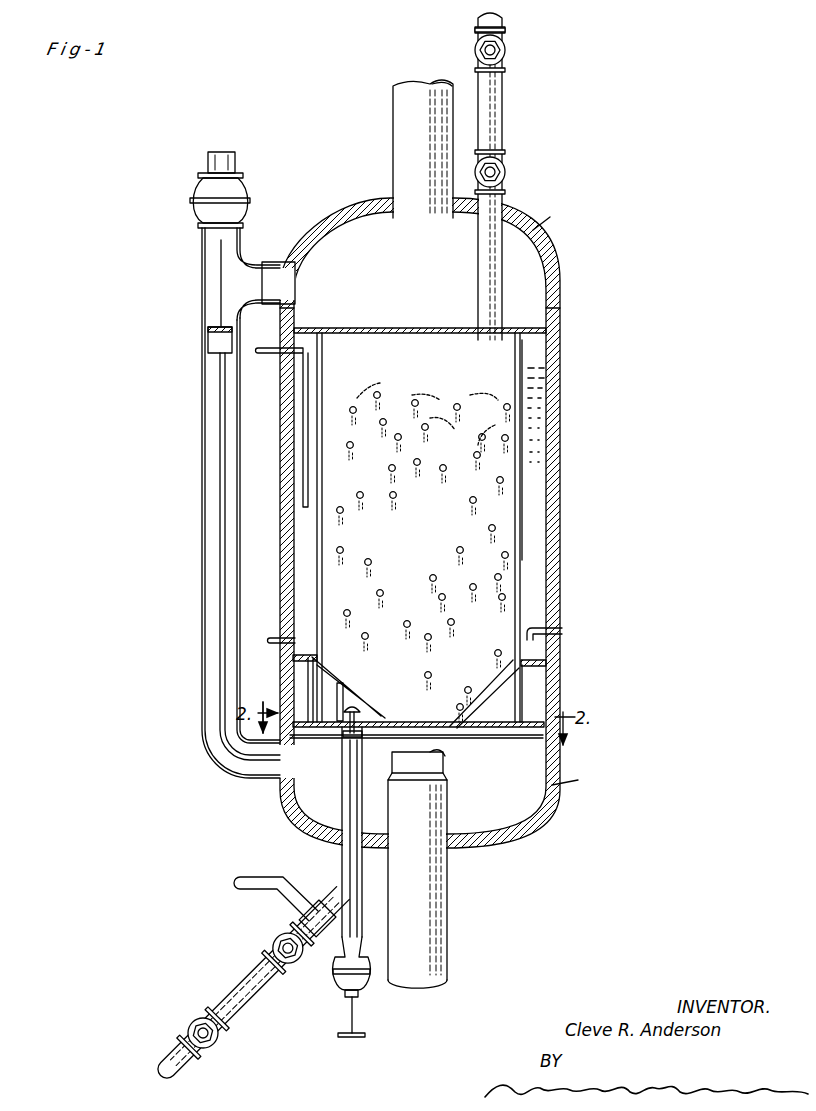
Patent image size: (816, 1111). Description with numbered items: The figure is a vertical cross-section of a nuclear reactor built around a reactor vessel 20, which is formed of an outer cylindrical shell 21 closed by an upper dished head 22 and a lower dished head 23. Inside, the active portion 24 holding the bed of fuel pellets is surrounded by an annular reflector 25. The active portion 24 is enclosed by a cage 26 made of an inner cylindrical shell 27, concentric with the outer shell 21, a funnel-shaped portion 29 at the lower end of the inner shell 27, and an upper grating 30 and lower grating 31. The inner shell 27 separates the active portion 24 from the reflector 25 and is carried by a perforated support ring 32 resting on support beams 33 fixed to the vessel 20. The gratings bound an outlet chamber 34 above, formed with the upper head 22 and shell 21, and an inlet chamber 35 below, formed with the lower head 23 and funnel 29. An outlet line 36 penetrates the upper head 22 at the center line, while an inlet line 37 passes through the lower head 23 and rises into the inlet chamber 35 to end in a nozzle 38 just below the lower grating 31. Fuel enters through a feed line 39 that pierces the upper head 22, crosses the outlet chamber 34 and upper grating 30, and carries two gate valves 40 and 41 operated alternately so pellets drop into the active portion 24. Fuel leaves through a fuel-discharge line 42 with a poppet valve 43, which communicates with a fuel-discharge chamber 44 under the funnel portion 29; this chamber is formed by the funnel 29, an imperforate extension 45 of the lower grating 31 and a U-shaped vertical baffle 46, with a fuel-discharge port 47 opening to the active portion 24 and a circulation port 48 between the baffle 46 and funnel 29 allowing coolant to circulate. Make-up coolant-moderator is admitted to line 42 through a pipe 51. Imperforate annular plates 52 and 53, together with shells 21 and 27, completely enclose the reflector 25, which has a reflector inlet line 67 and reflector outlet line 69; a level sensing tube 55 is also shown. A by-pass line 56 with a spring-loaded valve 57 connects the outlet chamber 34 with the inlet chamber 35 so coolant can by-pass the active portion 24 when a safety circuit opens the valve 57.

The reactor vessel 20 is at (582, 270).
The outer cylindrical shell 21 is at (560, 437).
The upper dished head 22 is at (554, 214).
The lower dished head 23 is at (577, 776).
The active portion 24 is at (436, 527).
The annular reflector 25 is at (537, 513).
The cage 26 is at (528, 557).
The inner cylindrical shell 27 is at (520, 575).
The conical or funnel-shaped portion 29 is at (505, 672).
The upper grating 30 is at (403, 328).
The lower grating 31 is at (447, 722).
The perforated support ring 32 is at (524, 691).
The support beams 33 is at (505, 737).
The outlet chamber 34 is at (436, 278).
The inlet chamber 35 is at (500, 800).
The outlet line 36 is at (410, 125).
The inlet line 37 is at (417, 905).
The nozzle 38 is at (428, 750).
The feed line 39 is at (490, 110).
The gate valve 40 is at (506, 49).
The gate valve 41 is at (506, 173).
The fuel-discharge line 42 is at (342, 856).
The poppet valve 43 is at (340, 982).
The fuel-discharge chamber 44 is at (356, 702).
The imperforate extension 45 is at (377, 732).
The U-shaped vertical baffle 46 is at (347, 692).
The fuel-discharge port 47 is at (362, 715).
The circulation port 48 is at (327, 681).
The pipe 51 is at (266, 883).
The imperforate annular plate 52 is at (309, 329).
The imperforate annular plate 53 is at (548, 664).
The level sensing tube 55 is at (562, 631).
The by-pass line 56 is at (202, 500).
The spring-loaded valve 57 is at (207, 208).
The reflector inlet line 67 is at (272, 640).
The reflector outlet line 69 is at (270, 353).